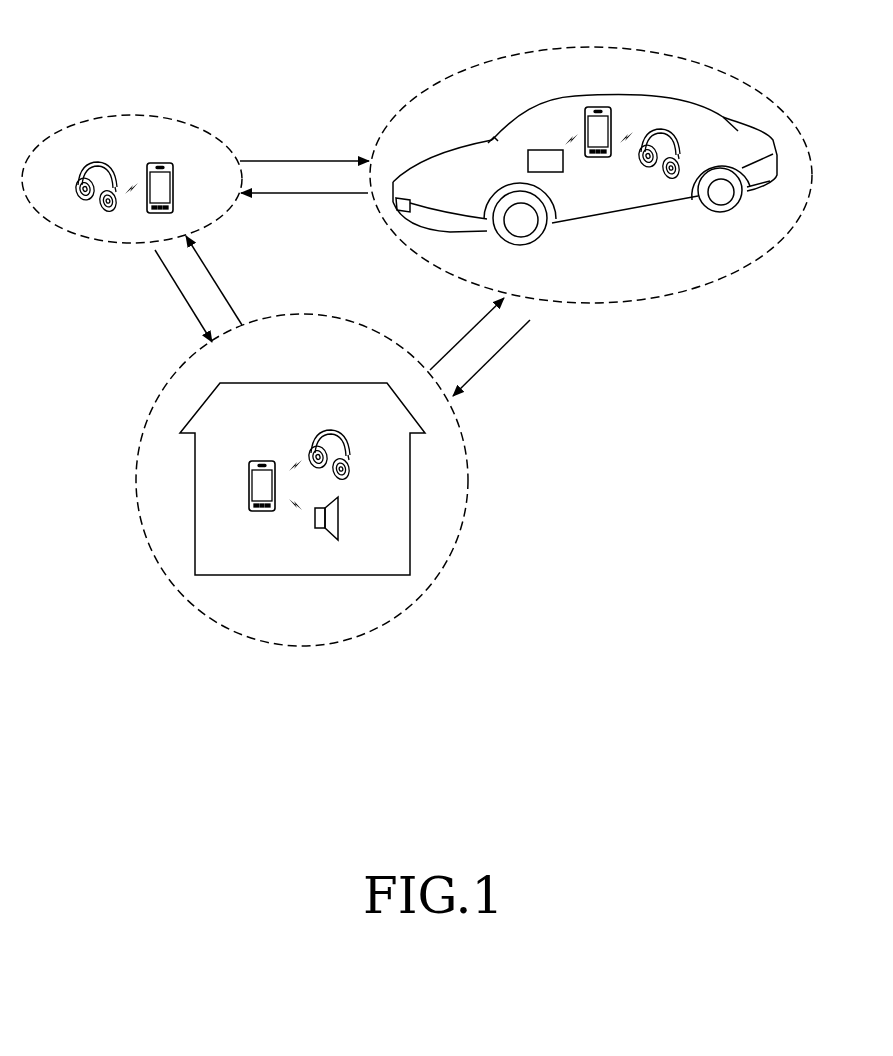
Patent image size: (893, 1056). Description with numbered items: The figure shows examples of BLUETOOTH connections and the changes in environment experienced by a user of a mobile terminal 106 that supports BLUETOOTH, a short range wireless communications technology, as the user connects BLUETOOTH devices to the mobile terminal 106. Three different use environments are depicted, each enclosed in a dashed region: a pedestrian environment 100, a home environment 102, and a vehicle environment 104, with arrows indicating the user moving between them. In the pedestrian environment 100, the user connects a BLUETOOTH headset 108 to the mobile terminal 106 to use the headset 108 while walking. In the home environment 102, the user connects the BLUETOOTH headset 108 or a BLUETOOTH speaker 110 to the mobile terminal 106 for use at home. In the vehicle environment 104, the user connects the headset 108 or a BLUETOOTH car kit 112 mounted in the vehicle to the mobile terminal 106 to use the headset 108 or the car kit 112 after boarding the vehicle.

The pedestrian environment 100 is at (128, 113).
The home environment 102 is at (300, 313).
The vehicle environment 104 is at (586, 46).
The mobile terminal 106 is at (159, 162).
The BLUETOOTH headset 108 is at (98, 161).
The BLUETOOTH speaker 110 is at (340, 517).
The BLUETOOTH car kit 112 is at (544, 149).